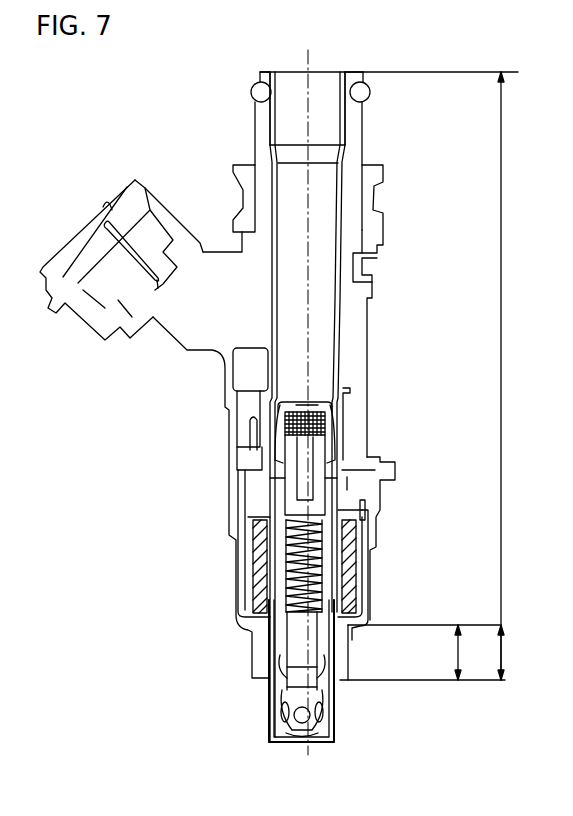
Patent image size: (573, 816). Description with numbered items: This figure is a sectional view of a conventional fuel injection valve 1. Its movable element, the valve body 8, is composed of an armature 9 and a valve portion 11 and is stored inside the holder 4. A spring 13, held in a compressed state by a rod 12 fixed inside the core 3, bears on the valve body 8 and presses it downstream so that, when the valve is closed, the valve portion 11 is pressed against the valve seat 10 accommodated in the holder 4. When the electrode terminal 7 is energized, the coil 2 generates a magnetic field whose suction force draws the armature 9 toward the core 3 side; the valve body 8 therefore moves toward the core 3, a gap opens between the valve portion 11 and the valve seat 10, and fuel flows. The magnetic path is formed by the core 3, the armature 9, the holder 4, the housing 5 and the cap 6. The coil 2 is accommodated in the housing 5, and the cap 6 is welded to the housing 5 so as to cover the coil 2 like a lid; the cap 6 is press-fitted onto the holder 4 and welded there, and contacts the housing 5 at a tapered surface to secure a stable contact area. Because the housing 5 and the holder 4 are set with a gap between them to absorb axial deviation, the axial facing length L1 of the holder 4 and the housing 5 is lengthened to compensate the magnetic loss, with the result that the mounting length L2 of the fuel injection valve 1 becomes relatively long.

The fuel injection valve 1 is at (373, 66).
The coil 2 is at (369, 513).
The core 3 is at (273, 500).
The holder 4 is at (268, 694).
The housing 5 is at (233, 588).
The cap 6 is at (357, 488).
The electrode terminal 7 is at (93, 210).
The valve body 8 is at (418, 638).
The armature 9 is at (322, 653).
The valve seat 10 is at (270, 737).
The valve portion 11 is at (322, 687).
The rod 12 is at (306, 462).
The spring 13 is at (315, 558).
The axial facing length L1 is at (485, 652).
The mounting length L2 is at (501, 197).